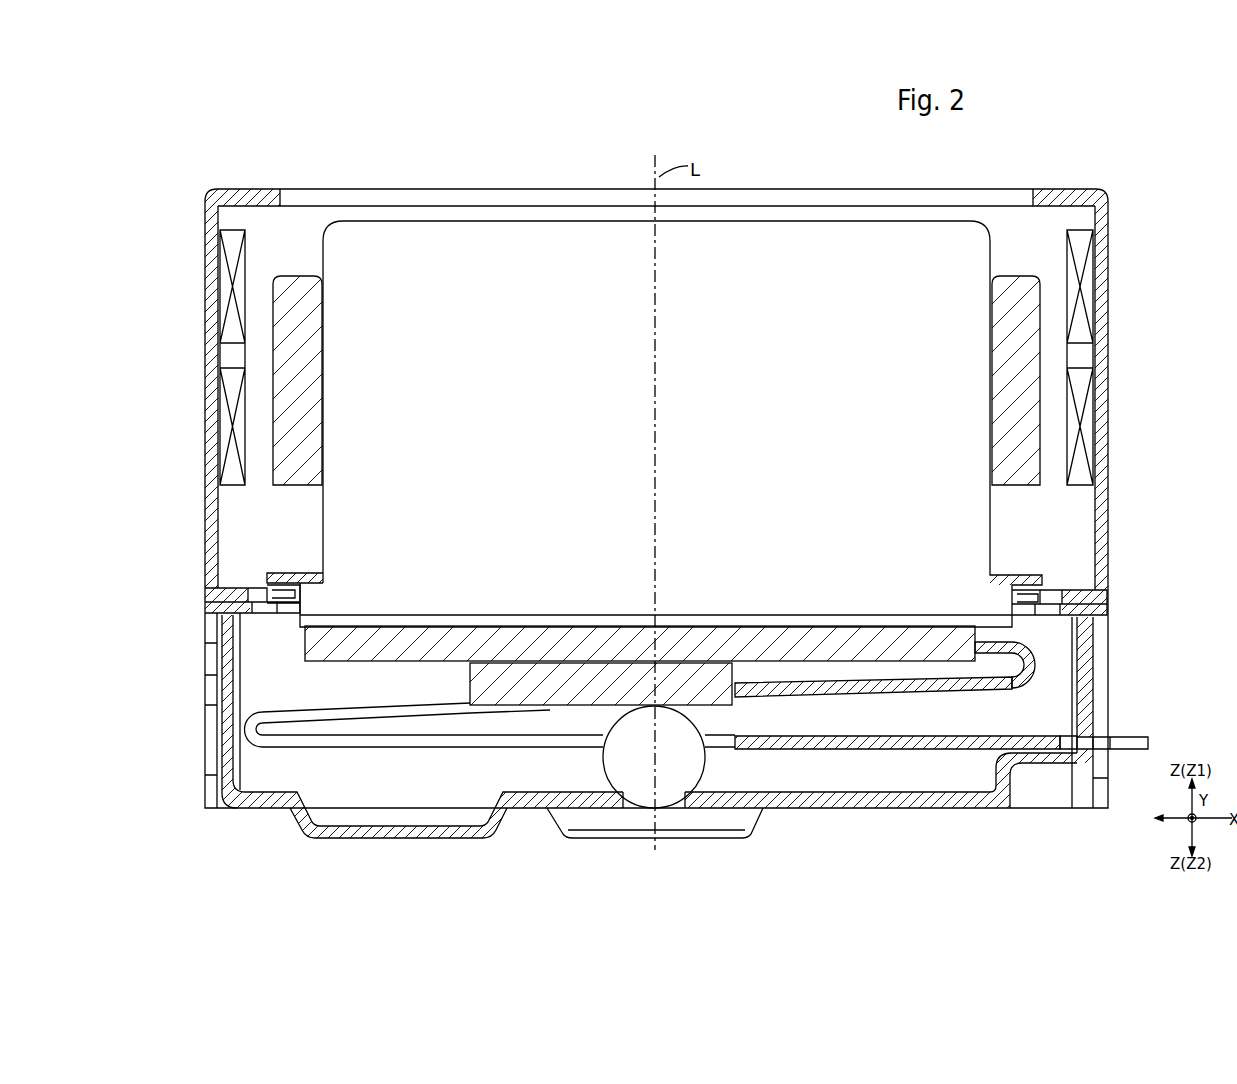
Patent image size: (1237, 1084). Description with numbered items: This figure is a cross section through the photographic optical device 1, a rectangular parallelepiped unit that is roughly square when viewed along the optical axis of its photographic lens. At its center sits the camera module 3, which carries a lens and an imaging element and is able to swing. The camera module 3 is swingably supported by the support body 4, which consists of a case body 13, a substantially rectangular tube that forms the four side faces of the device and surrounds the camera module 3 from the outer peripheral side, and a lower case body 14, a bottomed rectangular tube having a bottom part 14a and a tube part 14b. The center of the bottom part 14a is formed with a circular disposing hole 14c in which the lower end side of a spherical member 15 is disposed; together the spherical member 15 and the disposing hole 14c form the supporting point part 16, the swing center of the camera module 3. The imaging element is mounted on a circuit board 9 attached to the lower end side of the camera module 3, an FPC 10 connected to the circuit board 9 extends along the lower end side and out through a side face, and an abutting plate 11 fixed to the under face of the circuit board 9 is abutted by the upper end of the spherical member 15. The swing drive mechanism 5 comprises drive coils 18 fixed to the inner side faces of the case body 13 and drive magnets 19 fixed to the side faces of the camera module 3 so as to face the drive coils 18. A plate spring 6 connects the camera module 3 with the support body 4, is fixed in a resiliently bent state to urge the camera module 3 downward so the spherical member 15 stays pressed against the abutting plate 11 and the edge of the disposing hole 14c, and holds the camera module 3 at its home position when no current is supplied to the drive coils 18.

The photographic optical device 1 is at (1150, 184).
The camera module 3 is at (887, 221).
The support body 4 is at (1108, 325).
The case body 13 is at (1108, 325).
The swing drive mechanism 5 is at (1068, 216).
The plate spring 6 is at (1110, 610).
The circuit board 9 is at (304, 643).
The FPC 10 is at (944, 737).
The abutting plate 11 is at (469, 681).
The lower case body 14 is at (1093, 672).
The bottom part 14a is at (854, 810).
The tube part 14b is at (1093, 672).
The disposing hole 14c is at (682, 808).
The spherical member 15 is at (705, 775).
The supporting point part 16 is at (703, 824).
The drive coil 18 is at (218, 272).
The drive magnet 19 is at (298, 486).